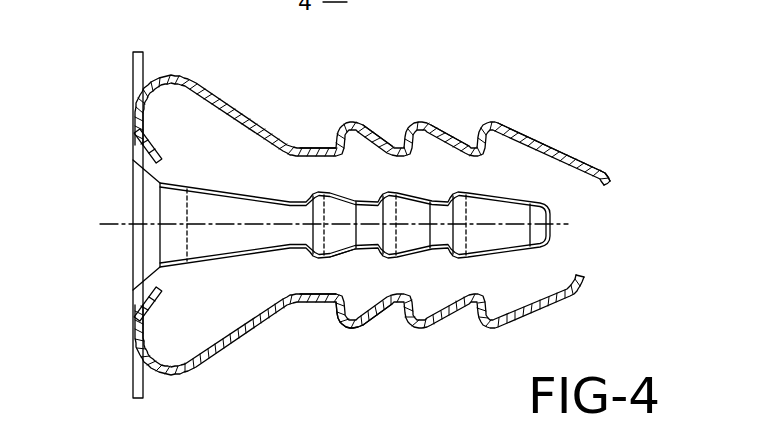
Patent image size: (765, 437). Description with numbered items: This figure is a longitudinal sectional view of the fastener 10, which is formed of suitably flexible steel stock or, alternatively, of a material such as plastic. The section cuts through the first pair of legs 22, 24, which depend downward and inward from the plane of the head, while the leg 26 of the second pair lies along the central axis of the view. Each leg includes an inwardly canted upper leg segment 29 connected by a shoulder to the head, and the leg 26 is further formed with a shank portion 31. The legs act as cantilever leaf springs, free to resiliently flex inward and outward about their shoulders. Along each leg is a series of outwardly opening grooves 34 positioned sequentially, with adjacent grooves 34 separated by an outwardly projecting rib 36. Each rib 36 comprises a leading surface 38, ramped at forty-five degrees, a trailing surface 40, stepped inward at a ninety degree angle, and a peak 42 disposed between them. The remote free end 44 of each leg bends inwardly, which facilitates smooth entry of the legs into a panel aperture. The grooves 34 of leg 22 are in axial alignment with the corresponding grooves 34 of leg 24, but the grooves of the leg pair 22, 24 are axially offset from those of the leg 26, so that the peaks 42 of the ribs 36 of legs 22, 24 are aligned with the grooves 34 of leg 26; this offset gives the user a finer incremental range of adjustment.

The fastener 10 is at (309, 203).
The leg 22 is at (545, 310).
The leg 24 is at (518, 131).
The leg 26 is at (488, 218).
The upper leg segment 29 is at (236, 109).
The shank portion 31 is at (312, 147).
The groove 34 is at (397, 142).
The rib 36 is at (484, 120).
The leading surface 38 is at (373, 318).
The trailing surface 40 is at (338, 317).
The peak 42 is at (355, 330).
The remote free end 44 is at (612, 176).